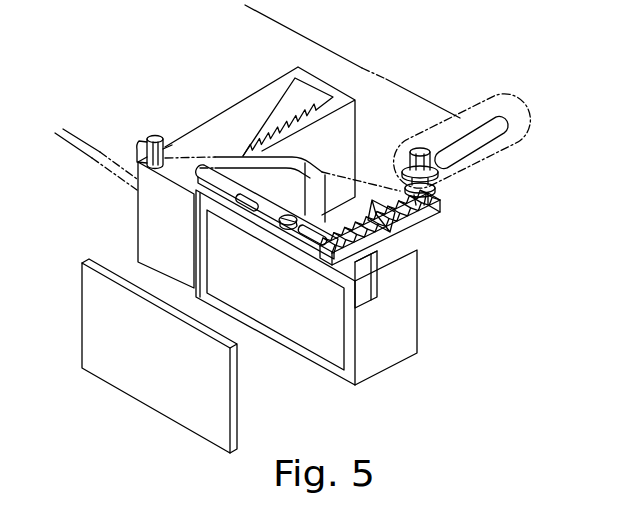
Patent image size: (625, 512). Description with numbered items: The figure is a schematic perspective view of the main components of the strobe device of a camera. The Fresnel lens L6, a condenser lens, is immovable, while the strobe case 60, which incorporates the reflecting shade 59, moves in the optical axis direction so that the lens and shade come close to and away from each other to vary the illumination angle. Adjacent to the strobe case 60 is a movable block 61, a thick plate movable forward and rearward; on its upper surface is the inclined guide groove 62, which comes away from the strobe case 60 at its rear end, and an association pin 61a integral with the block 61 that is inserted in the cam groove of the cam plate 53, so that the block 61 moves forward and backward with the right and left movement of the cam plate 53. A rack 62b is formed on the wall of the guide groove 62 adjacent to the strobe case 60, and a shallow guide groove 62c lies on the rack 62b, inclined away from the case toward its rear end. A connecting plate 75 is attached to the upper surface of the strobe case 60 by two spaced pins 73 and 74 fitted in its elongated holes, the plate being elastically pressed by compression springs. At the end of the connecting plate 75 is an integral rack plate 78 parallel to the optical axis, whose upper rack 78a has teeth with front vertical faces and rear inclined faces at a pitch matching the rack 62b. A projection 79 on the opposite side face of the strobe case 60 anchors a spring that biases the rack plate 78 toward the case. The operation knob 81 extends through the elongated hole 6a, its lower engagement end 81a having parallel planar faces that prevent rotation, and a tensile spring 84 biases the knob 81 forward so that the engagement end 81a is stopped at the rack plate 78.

The elongated hole 6a is at (503, 122).
The cam plate 53 is at (365, 71).
The reflecting shade 59 is at (306, 337).
The strobe case 60 is at (397, 347).
The movable block 61 is at (152, 221).
The association pin 61a is at (153, 137).
The inclined guide groove 62 is at (230, 143).
The rack 62b is at (250, 151).
The shallow guide groove 62c is at (318, 98).
The pin 73 is at (148, 192).
The pin 74 is at (268, 229).
The connecting plate 75 is at (287, 191).
The rack plate 78 is at (442, 212).
The rack 78a is at (414, 234).
The projection 79 is at (370, 286).
The operation knob 81 is at (421, 150).
The lower engagement end 81a is at (433, 218).
The tensile spring 84 is at (378, 205).
The Fresnel lens L6 is at (87, 328).